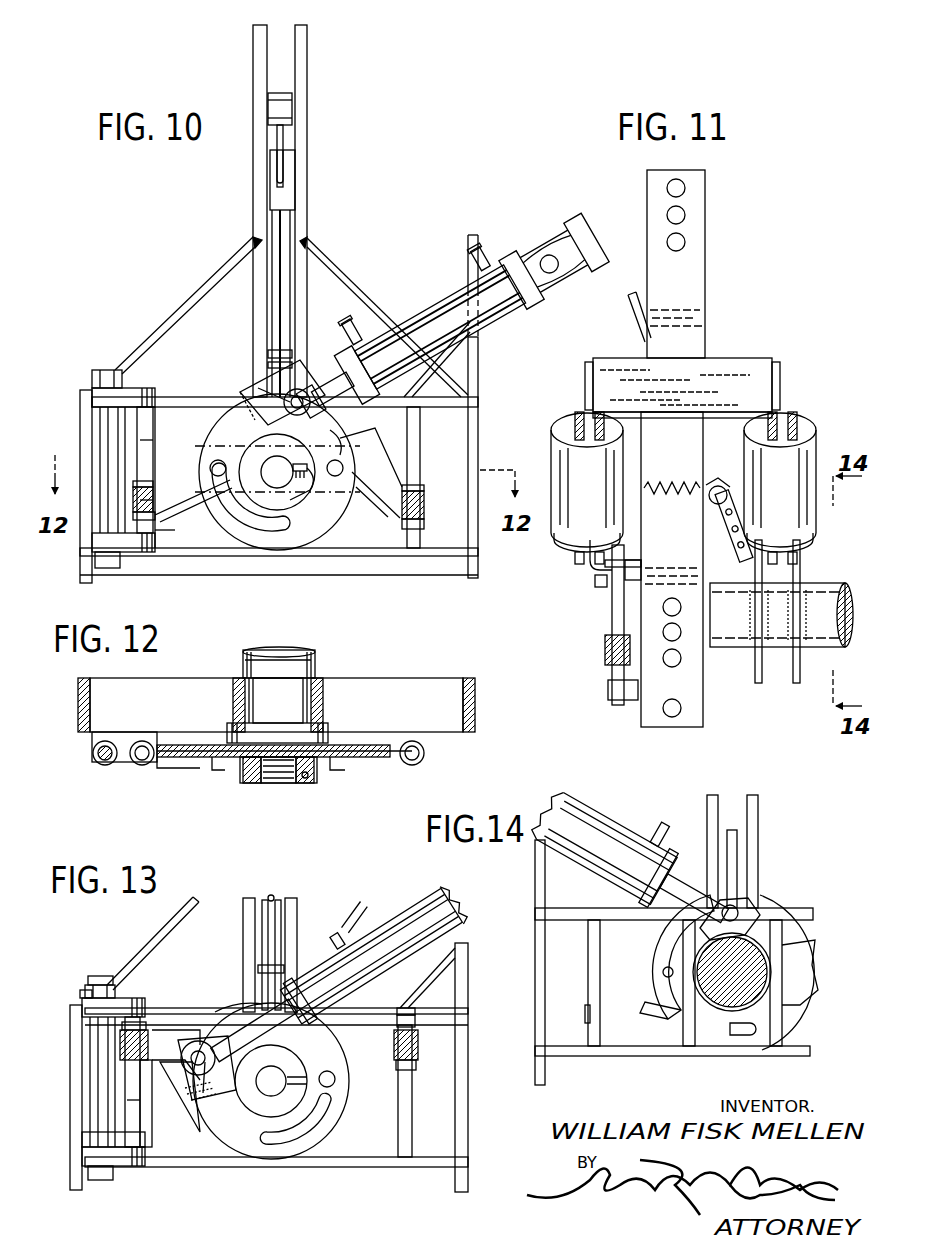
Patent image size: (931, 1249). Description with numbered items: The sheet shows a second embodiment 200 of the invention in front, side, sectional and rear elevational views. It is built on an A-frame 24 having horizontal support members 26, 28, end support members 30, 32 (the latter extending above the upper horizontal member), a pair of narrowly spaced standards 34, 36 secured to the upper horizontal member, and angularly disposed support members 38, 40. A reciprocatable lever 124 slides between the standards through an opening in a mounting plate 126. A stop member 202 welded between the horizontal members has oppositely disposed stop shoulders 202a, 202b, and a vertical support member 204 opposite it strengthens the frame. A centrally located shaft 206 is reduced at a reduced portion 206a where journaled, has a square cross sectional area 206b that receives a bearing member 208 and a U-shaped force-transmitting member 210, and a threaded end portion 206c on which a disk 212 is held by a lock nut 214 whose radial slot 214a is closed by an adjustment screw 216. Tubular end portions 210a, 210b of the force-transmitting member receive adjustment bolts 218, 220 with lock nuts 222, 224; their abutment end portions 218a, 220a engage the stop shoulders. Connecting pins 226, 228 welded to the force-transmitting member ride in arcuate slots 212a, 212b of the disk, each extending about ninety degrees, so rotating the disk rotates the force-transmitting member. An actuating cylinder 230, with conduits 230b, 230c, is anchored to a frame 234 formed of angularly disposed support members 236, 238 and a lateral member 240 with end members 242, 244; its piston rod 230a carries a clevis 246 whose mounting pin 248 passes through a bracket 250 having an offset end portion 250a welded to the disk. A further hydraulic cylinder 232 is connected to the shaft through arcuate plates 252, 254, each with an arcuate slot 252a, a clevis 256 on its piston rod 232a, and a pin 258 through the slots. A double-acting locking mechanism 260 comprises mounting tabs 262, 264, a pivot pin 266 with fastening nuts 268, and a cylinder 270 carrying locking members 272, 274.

In FIG. 10, the A-frame 24 is at (330, 232).
In FIG. 11, the A-frame 24 is at (711, 223).
In FIG. 10, the horizontal support member 26 is at (182, 397).
In FIG. 13, the horizontal support member 26 is at (392, 1003).
In FIG. 14, the horizontal support member 26 is at (575, 910).
In FIG. 10, the horizontal support member 28 is at (183, 556).
In FIG. 13, the horizontal support member 28 is at (338, 1160).
In FIG. 14, the horizontal support member 28 is at (735, 1052).
In FIG. 10, the end support member 30 is at (82, 428).
In FIG. 12, the end support member 30 is at (76, 700).
In FIG. 13, the end support member 30 is at (72, 1135).
In FIG. 10, the end support member 32 is at (479, 428).
In FIG. 12, the end support member 32 is at (477, 700).
In FIG. 13, the end support member 32 is at (470, 1125).
In FIG. 14, the end support member 32 is at (535, 1045).
In FIG. 10, the standard 34 is at (256, 92).
In FIG. 13, the standard 34 is at (244, 950).
In FIG. 14, the standard 34 is at (760, 808).
In FIG. 10, the standard 36 is at (303, 78).
In FIG. 13, the standard 36 is at (297, 908).
In FIG. 14, the standard 36 is at (710, 795).
In FIG. 11, the angularly disposed support member 38 is at (639, 317).
In FIG. 13, the angularly disposed support member 38 is at (155, 925).
In FIG. 10, the angularly disposed support member 40 is at (345, 277).
In FIG. 10, the reciprocatable lever 124 is at (280, 160).
In FIG. 13, the reciprocatable lever 124 is at (280, 900).
In FIG. 10, the mounting plate 126 is at (287, 198).
In FIG. 10, the second embodiment 200 is at (279, 337).
In FIG. 10, the stop member 202 is at (145, 425).
In FIG. 13, the stop member 202 is at (142, 1125).
In FIG. 10, the stop shoulder 202a is at (148, 452).
In FIG. 10, the stop shoulder 202b is at (152, 500).
In FIG. 13, the stop shoulder 202b is at (140, 1102).
In FIG. 10, the vertical support member 204 is at (414, 440).
In FIG. 13, the vertical support member 204 is at (410, 1118).
In FIG. 14, the vertical support member 204 is at (600, 1025).
In FIG. 12, the shaft 206 is at (282, 678).
In FIG. 13, the shaft 206 is at (287, 1060).
In FIG. 12, the reduced portion 206a is at (245, 705).
In FIG. 12, the square cross sectional area 206b is at (265, 745).
In FIG. 12, the threaded end portion 206c is at (270, 780).
In FIG. 12, the bearing member 208 is at (305, 735).
In FIG. 10, the force-transmitting member 210 is at (193, 470).
In FIG. 12, the force-transmitting member 210 is at (172, 757).
In FIG. 13, the force-transmitting member 210 is at (345, 1085).
In FIG. 14, the force-transmitting member 210 is at (812, 975).
In FIG. 10, the tubular end portion 210a is at (157, 515).
In FIG. 12, the tubular end portion 210a is at (152, 770).
In FIG. 13, the tubular end portion 210a is at (405, 1043).
In FIG. 10, the tubular end portion 210b is at (424, 505).
In FIG. 12, the tubular end portion 210b is at (420, 760).
In FIG. 13, the tubular end portion 210b is at (138, 1022).
In FIG. 14, the tubular end portion 210b is at (585, 1013).
In FIG. 10, the disk 212 is at (353, 475).
In FIG. 12, the disk 212 is at (360, 760).
In FIG. 13, the disk 212 is at (242, 1150).
In FIG. 14, the disk 212 is at (800, 945).
In FIG. 10, the arcuate slot 212a is at (247, 523).
In FIG. 13, the arcuate slot 212a is at (312, 1125).
In FIG. 10, the arcuate slot 212b is at (335, 440).
In FIG. 13, the arcuate slot 212b is at (235, 1012).
In FIG. 10, the lock nut 214 is at (203, 487).
In FIG. 12, the lock nut 214 is at (240, 770).
In FIG. 13, the lock nut 214 is at (258, 1112).
In FIG. 10, the radial slot 214a is at (302, 486).
In FIG. 10, the adjustment screw 216 is at (285, 498).
In FIG. 12, the adjustment screw 216 is at (304, 780).
In FIG. 10, the adjustment bolt 218 is at (140, 530).
In FIG. 13, the adjustment bolt 218 is at (410, 1015).
In FIG. 10, the abutment end portion 218a is at (140, 484).
In FIG. 10, the adjustment bolt 220 is at (424, 527).
In FIG. 13, the adjustment bolt 220 is at (80, 995).
In FIG. 10, the abutment end portion 220a is at (412, 485).
In FIG. 10, the lock nut 222 is at (137, 517).
In FIG. 10, the lock nut 224 is at (400, 517).
In FIG. 10, the connecting pin 226 is at (220, 460).
In FIG. 12, the connecting pin 226 is at (213, 770).
In FIG. 13, the connecting pin 226 is at (275, 1070).
In FIG. 10, the connecting pin 228 is at (342, 462).
In FIG. 12, the connecting pin 228 is at (332, 770).
In FIG. 13, the connecting pin 228 is at (330, 1070).
In FIG. 10, the actuating cylinder 230 is at (427, 300).
In FIG. 11, the actuating cylinder 230 is at (568, 467).
In FIG. 13, the actuating cylinder 230 is at (405, 912).
In FIG. 10, the piston rod 230a is at (340, 380).
In FIG. 13, the piston rod 230a is at (300, 975).
In FIG. 10, the conduit 230b is at (367, 317).
In FIG. 10, the conduit 230c is at (477, 247).
In FIG. 11, the hydraulic cylinder 232 is at (793, 477).
In FIG. 14, the hydraulic cylinder 232 is at (598, 825).
In FIG. 14, the piston rod 232a is at (688, 838).
In FIG. 10, the frame 234 is at (452, 283).
In FIG. 10, the angularly disposed support member 236 is at (554, 247).
In FIG. 11, the angularly disposed support member 236 is at (663, 440).
In FIG. 11, the angularly disposed support member 238 is at (710, 480).
In FIG. 11, the lateral member 240 is at (665, 370).
In FIG. 11, the end member 242 is at (588, 380).
In FIG. 11, the end member 244 is at (781, 378).
In FIG. 10, the clevis 246 is at (318, 372).
In FIG. 10, the mounting pin 248 is at (267, 362).
In FIG. 13, the mounting pin 248 is at (198, 1050).
In FIG. 10, the bracket 250 is at (253, 387).
In FIG. 11, the bracket 250 is at (598, 568).
In FIG. 13, the bracket 250 is at (203, 1095).
In FIG. 11, the offset end portion 250a is at (603, 585).
In FIG. 11, the arcuate plate 252 is at (797, 572).
In FIG. 14, the arcuate plate 252 is at (672, 945).
In FIG. 14, the arcuate slot 252a is at (652, 1005).
In FIG. 11, the arcuate plate 254 is at (762, 675).
In FIG. 14, the clevis 256 is at (738, 905).
In FIG. 14, the pin 258 is at (760, 900).
In FIG. 13, the double-acting locking mechanism 260 is at (75, 1078).
In FIG. 10, the mounting tab 262 is at (107, 379).
In FIG. 13, the mounting tab 262 is at (88, 990).
In FIG. 13, the mounting tab 264 is at (84, 1150).
In FIG. 12, the pivot pin 266 is at (130, 762).
In FIG. 10, the fastening nut 268 is at (107, 560).
In FIG. 13, the fastening nut 268 is at (100, 978).
In FIG. 10, the cylinder 270 is at (112, 470).
In FIG. 12, the cylinder 270 is at (97, 760).
In FIG. 13, the cylinder 270 is at (98, 1048).
In FIG. 10, the locking member 272 is at (128, 393).
In FIG. 13, the locking member 272 is at (122, 998).
In FIG. 10, the locking member 274 is at (93, 543).
In FIG. 12, the locking member 274 is at (122, 740).
In FIG. 13, the locking member 274 is at (125, 1166).